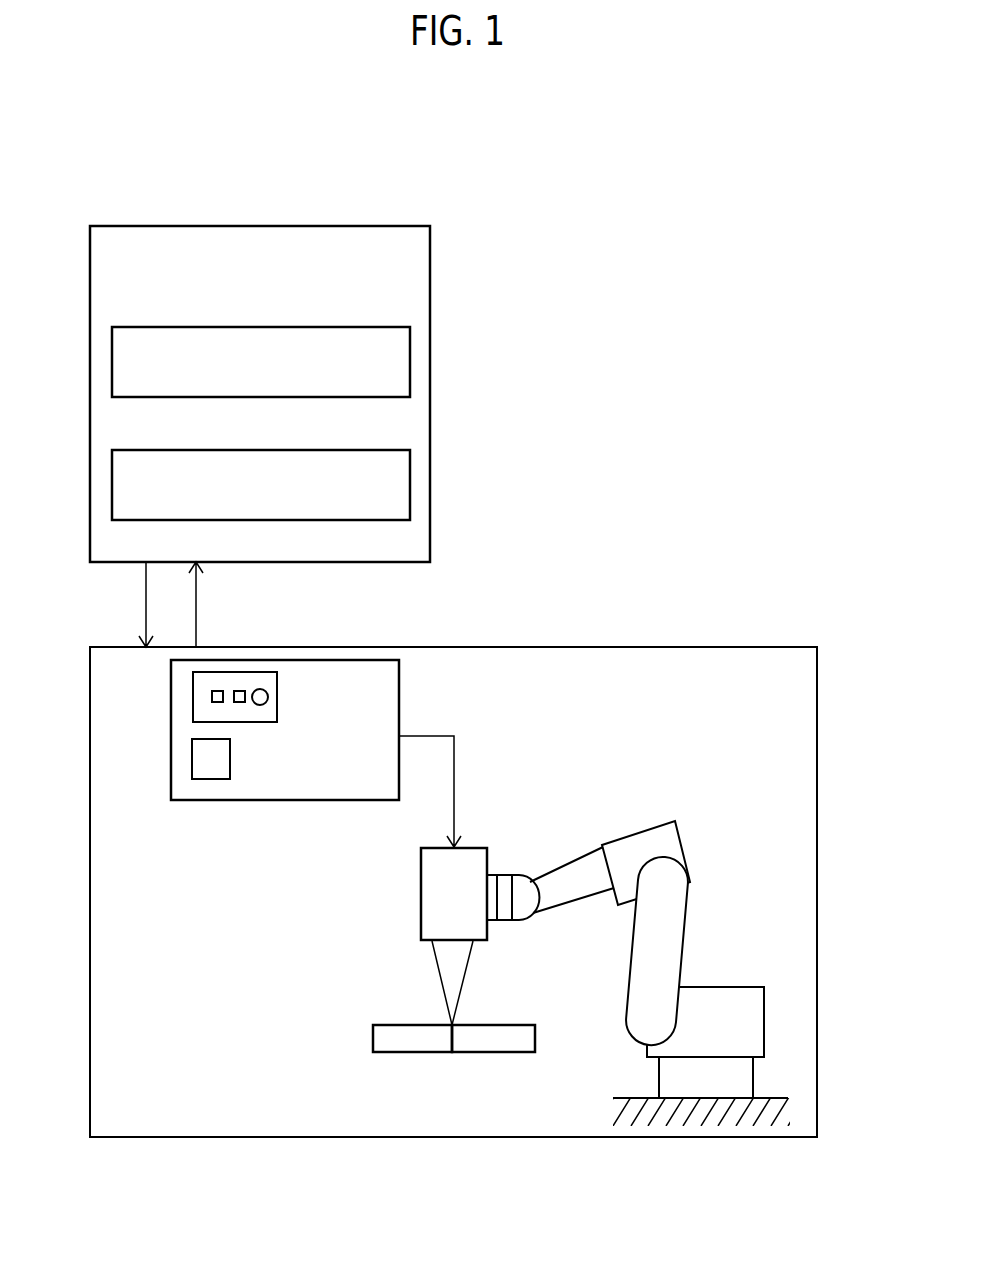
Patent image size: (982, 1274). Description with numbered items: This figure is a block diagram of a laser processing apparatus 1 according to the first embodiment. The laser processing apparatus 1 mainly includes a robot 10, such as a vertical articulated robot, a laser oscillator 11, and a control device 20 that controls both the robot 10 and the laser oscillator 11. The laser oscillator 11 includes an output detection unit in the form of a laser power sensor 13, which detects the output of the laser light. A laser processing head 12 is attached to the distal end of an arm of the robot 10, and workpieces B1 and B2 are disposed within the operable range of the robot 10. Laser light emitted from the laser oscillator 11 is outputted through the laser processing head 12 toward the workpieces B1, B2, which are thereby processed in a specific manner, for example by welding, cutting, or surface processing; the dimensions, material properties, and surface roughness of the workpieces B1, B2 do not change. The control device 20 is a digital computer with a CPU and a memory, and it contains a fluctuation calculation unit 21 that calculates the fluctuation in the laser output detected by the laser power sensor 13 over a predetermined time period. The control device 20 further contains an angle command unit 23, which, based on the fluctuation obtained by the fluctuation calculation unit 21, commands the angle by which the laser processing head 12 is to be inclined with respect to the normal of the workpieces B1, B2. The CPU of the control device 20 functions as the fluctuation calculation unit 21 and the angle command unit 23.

The laser processing apparatus 1 is at (770, 369).
The robot 10 is at (658, 945).
The laser oscillator 11 is at (402, 697).
The laser processing head 12 is at (472, 862).
The laser power sensor 13 is at (192, 763).
The control device 20 is at (430, 267).
The fluctuation calculation unit 21 is at (410, 373).
The angle command unit 23 is at (410, 487).
The workpiece B1 is at (402, 1040).
The workpiece B2 is at (498, 1040).